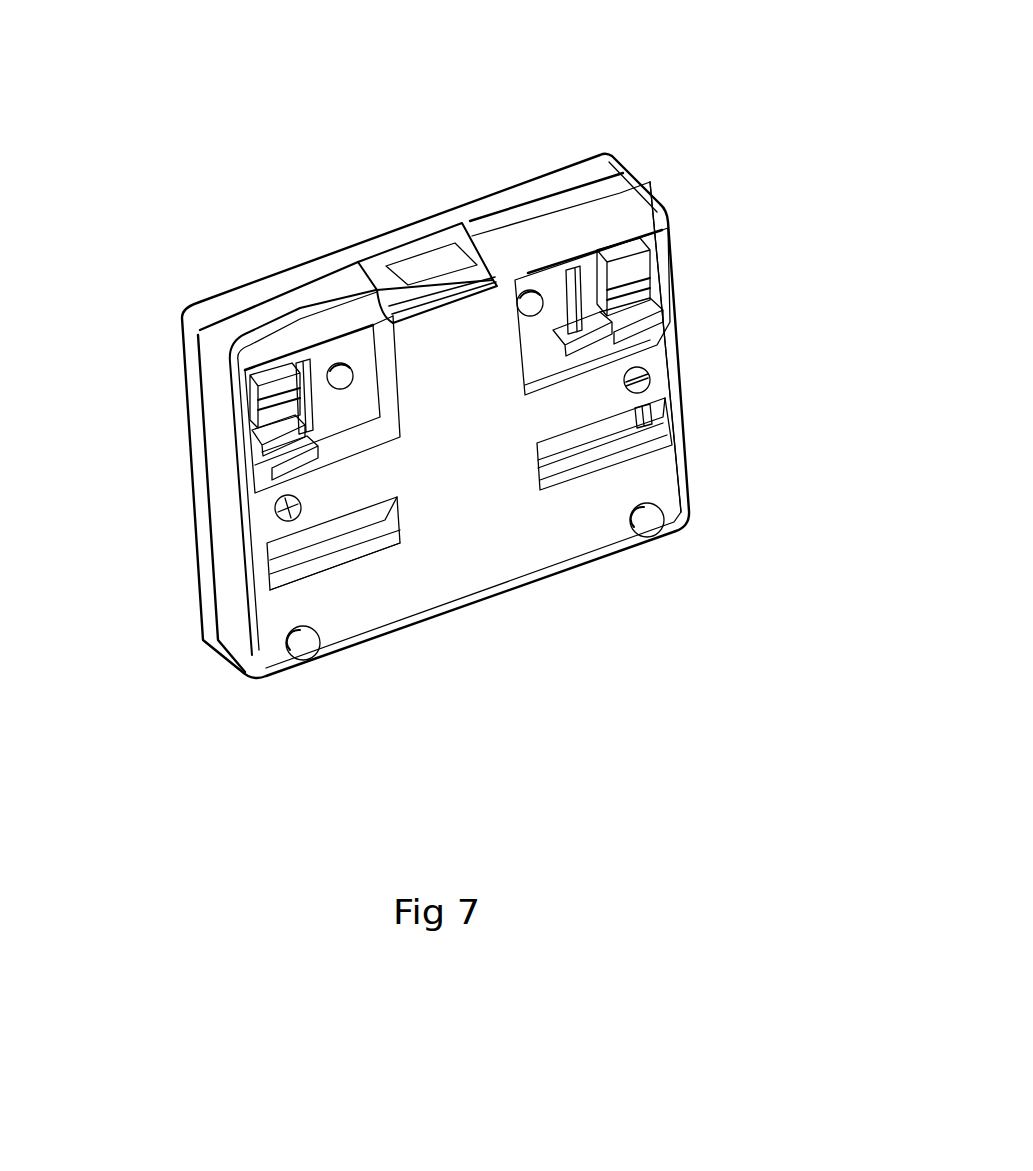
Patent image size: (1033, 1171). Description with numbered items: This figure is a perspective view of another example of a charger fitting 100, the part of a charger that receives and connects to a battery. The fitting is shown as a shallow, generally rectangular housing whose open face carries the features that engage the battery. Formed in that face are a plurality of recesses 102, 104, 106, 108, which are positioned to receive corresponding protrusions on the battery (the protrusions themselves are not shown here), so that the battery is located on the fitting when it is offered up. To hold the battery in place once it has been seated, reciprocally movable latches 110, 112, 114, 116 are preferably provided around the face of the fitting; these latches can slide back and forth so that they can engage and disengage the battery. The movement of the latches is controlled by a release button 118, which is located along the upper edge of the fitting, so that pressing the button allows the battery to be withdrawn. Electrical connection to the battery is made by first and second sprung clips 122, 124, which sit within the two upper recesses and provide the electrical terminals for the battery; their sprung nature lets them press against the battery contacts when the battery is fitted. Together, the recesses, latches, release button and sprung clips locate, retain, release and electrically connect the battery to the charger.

The charger fitting 100 is at (474, 405).
The recess 102 is at (346, 408).
The recess 104 is at (553, 345).
The recess 106 is at (318, 539).
The recess 108 is at (650, 413).
The latch 110 is at (243, 380).
The latch 112 is at (662, 232).
The latch 114 is at (352, 563).
The latch 116 is at (621, 460).
The release button 118 is at (408, 253).
The first sprung clip 122 is at (262, 413).
The second sprung clip 124 is at (622, 272).